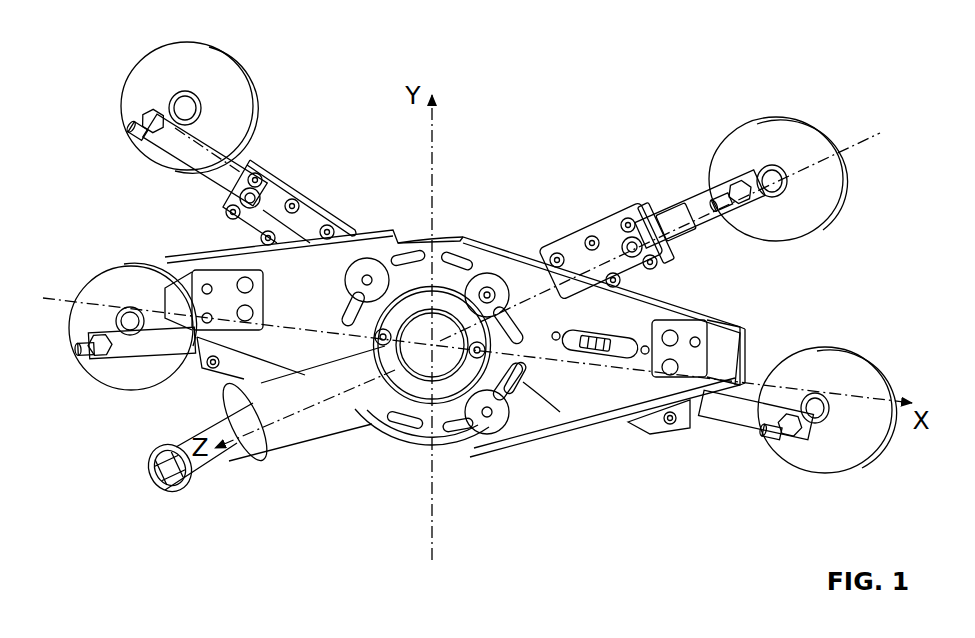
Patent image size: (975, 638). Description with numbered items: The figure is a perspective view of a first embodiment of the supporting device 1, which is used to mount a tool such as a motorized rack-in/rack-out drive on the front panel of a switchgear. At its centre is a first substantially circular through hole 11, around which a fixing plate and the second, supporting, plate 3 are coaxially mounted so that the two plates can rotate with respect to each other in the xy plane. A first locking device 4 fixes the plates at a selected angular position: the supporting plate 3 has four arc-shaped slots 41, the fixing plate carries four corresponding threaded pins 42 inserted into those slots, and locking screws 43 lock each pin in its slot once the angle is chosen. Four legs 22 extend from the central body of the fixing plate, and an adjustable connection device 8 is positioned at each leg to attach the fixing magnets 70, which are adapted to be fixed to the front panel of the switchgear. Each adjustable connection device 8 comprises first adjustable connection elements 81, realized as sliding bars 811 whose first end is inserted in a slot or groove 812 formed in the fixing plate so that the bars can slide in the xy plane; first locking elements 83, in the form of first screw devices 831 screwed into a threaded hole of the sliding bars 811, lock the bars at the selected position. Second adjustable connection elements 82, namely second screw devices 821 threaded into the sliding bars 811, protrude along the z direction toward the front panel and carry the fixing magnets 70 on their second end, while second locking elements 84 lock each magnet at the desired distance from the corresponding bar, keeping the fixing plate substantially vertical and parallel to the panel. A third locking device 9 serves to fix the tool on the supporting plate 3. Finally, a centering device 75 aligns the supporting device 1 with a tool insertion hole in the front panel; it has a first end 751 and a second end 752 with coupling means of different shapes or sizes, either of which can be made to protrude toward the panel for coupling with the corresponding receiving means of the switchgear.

The supporting device 1 is at (76, 57).
The second, supporting, plate 3 is at (498, 258).
The first locking device 4 is at (405, 243).
The arc-shaped slots 41 is at (446, 258).
The threaded pins 42 is at (487, 416).
The locking screws 43 is at (444, 339).
The adjustable connection device 8 is at (418, 196).
The first adjustable connection elements 81 is at (662, 206).
The sliding bars 811 is at (226, 166).
The slot or groove 812 is at (300, 215).
The second adjustable connection elements 82 is at (768, 214).
The second screw devices 821 is at (770, 168).
The first locking elements 83 is at (607, 226).
The first screw devices 831 is at (240, 204).
The second locking elements 84 is at (733, 183).
The third locking device 9 is at (135, 265).
The first substantially circular through hole 11 is at (438, 385).
The legs 22 is at (343, 224).
The fixing magnets 70 is at (475, 247).
The centering device 75 is at (163, 473).
The first end 751 is at (150, 478).
The second end 752 is at (300, 406).